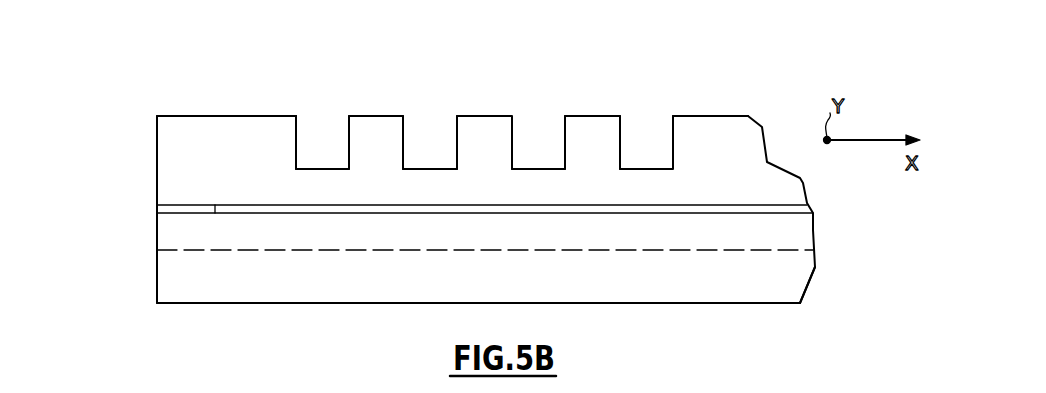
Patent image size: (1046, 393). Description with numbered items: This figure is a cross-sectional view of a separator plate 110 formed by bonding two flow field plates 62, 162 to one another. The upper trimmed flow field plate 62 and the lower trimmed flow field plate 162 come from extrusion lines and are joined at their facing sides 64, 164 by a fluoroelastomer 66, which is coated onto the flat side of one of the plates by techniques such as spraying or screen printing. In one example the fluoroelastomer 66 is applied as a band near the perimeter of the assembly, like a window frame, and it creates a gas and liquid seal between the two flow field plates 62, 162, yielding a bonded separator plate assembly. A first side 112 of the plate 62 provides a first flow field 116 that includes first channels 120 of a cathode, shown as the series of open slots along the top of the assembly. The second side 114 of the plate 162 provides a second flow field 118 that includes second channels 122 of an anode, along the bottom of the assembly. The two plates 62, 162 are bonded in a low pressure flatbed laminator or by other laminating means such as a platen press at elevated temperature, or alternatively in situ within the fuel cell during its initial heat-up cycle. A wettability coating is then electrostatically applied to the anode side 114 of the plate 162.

The separator plate 110 is at (133, 208).
The flow field plate 62 is at (230, 135).
The side of flow field plate 64 is at (232, 208).
The fluoroelastomer 66 is at (178, 213).
The first side 112 is at (694, 116).
The second side 114 is at (780, 303).
The first flow field 116 is at (547, 82).
The second flow field 118 is at (740, 303).
The first channels 120 is at (327, 125).
The second channels 122 is at (633, 303).
The flow field plate 162 is at (190, 277).
The side of flow field plate 164 is at (298, 210).